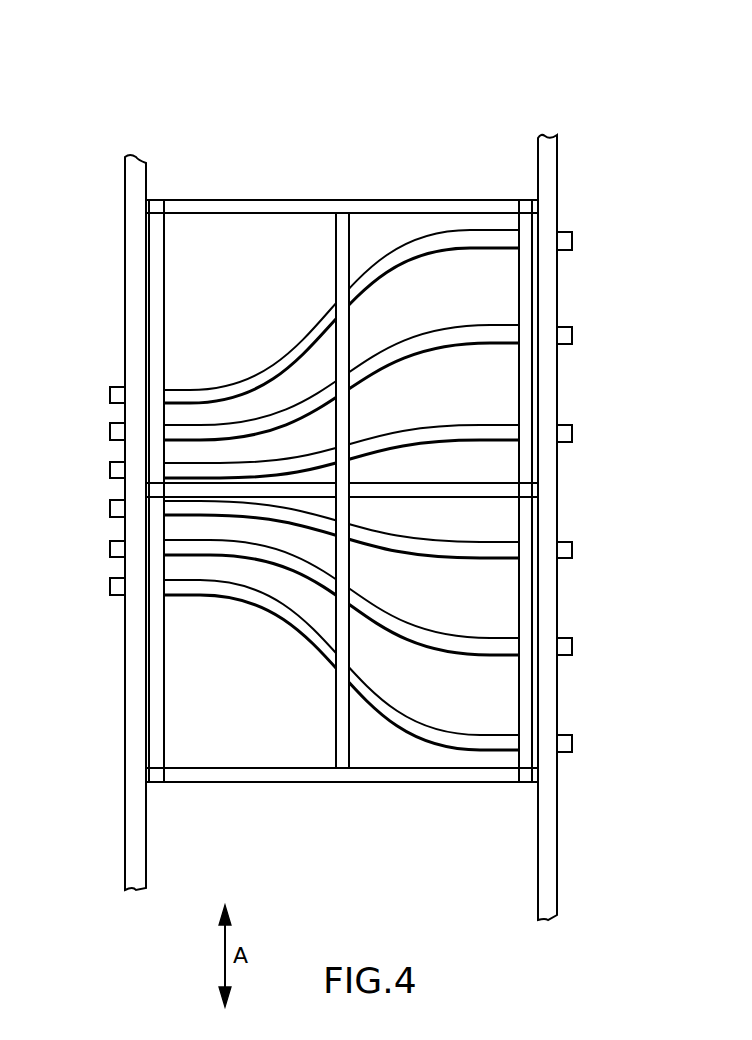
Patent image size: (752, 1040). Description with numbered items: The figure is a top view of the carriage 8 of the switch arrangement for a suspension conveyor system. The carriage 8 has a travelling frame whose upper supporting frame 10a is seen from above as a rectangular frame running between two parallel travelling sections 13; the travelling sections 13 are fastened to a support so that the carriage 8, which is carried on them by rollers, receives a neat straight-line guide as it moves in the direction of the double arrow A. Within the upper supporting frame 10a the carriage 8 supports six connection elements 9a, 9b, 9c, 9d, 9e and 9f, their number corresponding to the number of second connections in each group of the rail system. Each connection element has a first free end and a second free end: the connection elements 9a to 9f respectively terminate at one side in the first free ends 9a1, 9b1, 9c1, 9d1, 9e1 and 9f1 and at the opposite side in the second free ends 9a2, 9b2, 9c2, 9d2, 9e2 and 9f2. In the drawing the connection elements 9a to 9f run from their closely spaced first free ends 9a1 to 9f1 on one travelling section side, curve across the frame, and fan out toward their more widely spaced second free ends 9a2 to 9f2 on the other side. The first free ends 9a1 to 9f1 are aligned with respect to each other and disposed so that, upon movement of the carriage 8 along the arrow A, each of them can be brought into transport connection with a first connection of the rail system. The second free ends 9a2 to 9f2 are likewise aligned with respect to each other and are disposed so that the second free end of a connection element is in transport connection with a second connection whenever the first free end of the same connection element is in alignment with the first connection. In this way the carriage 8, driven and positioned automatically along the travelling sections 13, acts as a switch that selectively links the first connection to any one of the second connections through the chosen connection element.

The carriage 8 is at (312, 122).
The travelling sections 13 is at (135, 203).
The upper supporting frame 10a is at (372, 205).
The connection element 9a is at (458, 740).
The connection element 9b is at (458, 645).
The connection element 9c is at (458, 548).
The connection element 9d is at (462, 441).
The connection element 9e is at (458, 345).
The connection element 9f is at (445, 250).
The first free end 9a1 is at (112, 594).
The first free end 9b1 is at (112, 556).
The first free end 9c1 is at (112, 516).
The first free end 9d1 is at (112, 477).
The first free end 9e1 is at (112, 439).
The first free end 9f1 is at (112, 399).
The second free end 9a2 is at (572, 742).
The second free end 9b2 is at (572, 645).
The second free end 9c2 is at (572, 549).
The second free end 9d2 is at (572, 432).
The second free end 9e2 is at (572, 334).
The second free end 9f2 is at (572, 238).